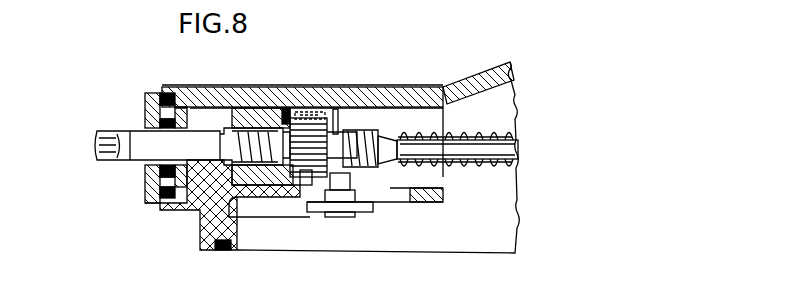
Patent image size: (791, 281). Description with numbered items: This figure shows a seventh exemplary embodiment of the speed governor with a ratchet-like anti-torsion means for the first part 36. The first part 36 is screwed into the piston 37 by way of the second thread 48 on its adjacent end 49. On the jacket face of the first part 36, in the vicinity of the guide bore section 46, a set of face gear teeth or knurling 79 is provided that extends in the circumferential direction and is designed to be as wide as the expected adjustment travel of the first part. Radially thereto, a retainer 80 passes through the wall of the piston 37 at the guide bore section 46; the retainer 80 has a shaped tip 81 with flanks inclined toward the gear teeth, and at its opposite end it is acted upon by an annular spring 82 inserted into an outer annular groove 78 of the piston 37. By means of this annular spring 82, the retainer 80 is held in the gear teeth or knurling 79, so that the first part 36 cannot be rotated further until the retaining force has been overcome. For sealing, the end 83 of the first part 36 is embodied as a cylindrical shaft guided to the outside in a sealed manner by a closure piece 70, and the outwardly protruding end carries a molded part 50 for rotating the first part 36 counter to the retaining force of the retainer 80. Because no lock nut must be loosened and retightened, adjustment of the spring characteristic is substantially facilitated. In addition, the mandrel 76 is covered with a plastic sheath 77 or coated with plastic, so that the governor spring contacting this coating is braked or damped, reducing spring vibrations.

The first part 36 is at (382, 128).
The piston 37 is at (247, 114).
The guide bore section 46 is at (280, 197).
The second thread 48 is at (207, 246).
The adjacent end of the first part 49 is at (222, 168).
The molded part 50 is at (94, 153).
The closure piece 70 is at (148, 113).
The mandrel 76 is at (483, 150).
The plastic sheath 77 is at (512, 132).
The outer annular groove 78 is at (282, 110).
The face gear teeth or knurling 79 is at (288, 113).
The retainer 80 is at (323, 194).
The shaped tip 81 is at (302, 186).
The annular spring 82 is at (317, 112).
The end of the first part 83 is at (137, 152).